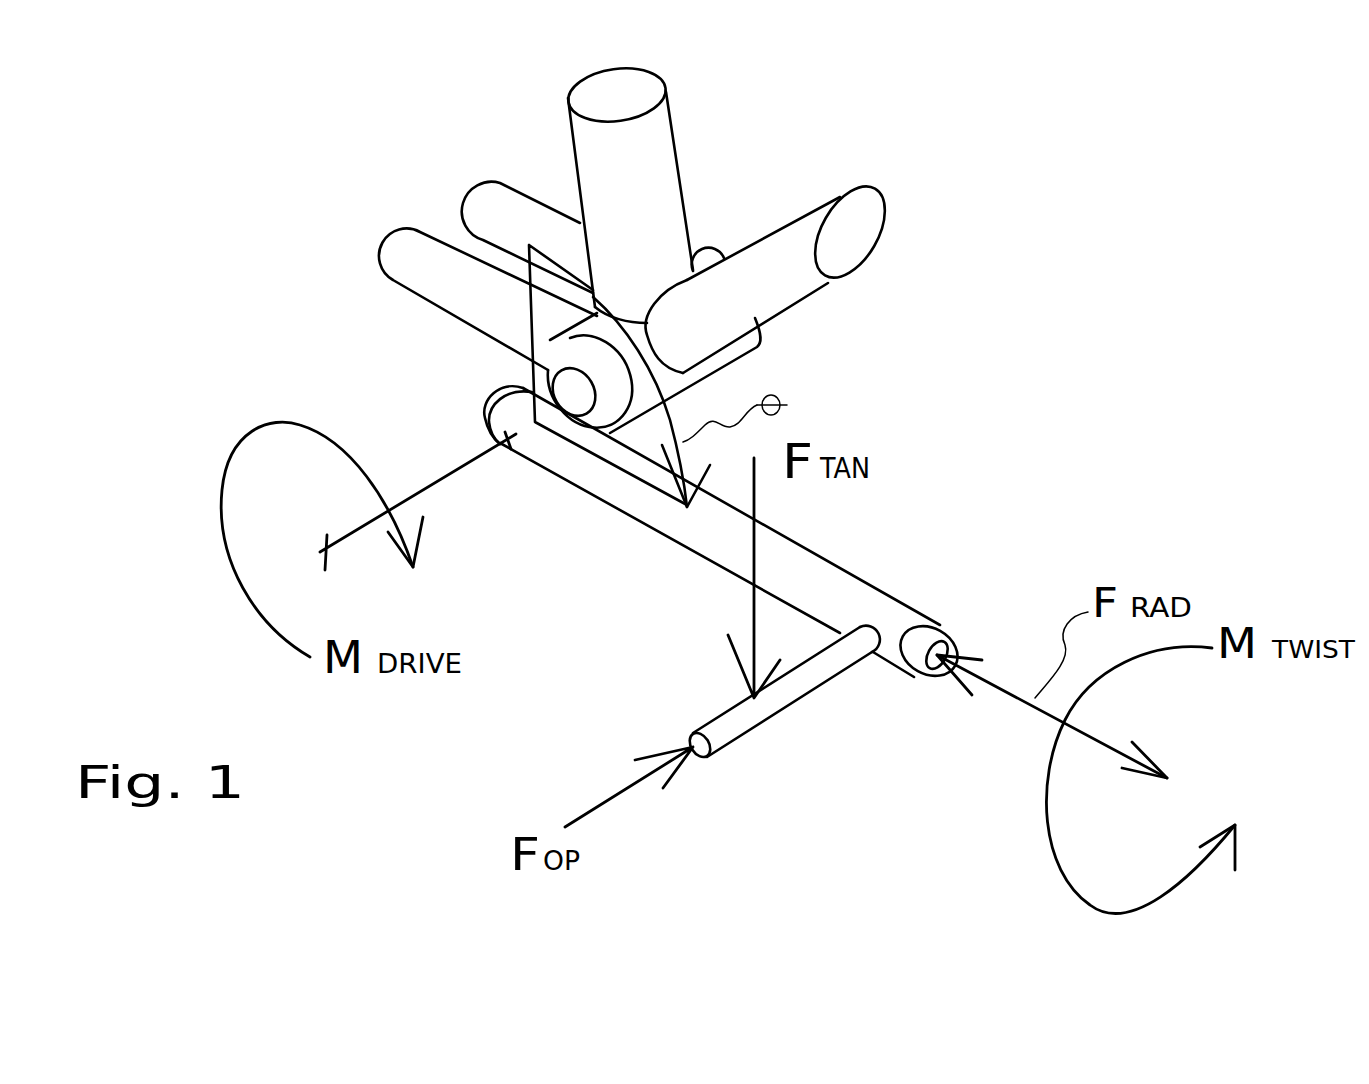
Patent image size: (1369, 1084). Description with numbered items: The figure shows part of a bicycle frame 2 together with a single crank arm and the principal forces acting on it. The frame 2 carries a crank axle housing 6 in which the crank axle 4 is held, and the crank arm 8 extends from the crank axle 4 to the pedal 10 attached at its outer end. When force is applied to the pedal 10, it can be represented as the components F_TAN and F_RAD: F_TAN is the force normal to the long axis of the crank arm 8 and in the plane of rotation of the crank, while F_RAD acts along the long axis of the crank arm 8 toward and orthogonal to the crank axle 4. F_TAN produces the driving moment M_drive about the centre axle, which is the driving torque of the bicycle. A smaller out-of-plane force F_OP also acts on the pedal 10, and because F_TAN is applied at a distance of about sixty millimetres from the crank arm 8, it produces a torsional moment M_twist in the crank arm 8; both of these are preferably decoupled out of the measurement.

The bicycle frame 2 is at (652, 137).
The crank axle 4 is at (567, 393).
The crank axle housing 6 is at (700, 257).
The crank arm 8 is at (703, 538).
The pedal 10 is at (800, 682).